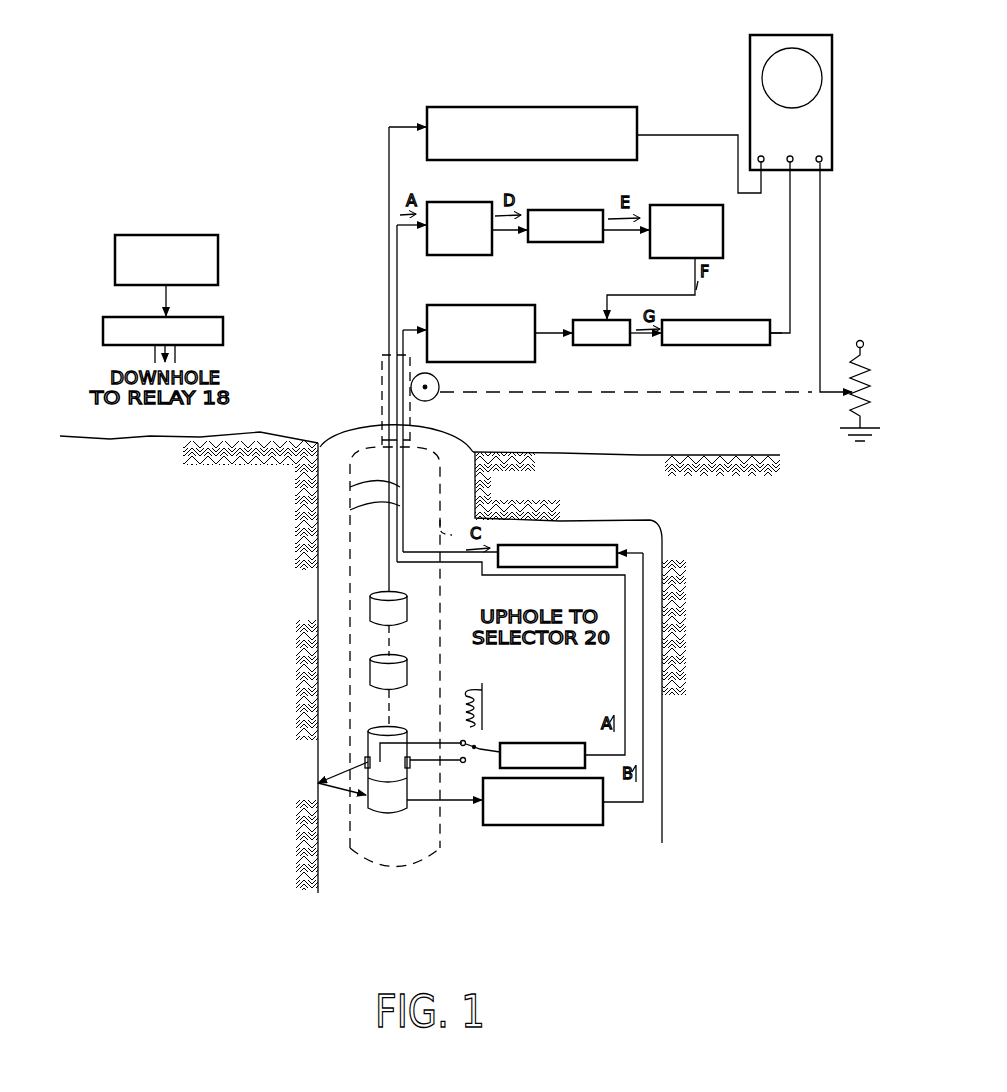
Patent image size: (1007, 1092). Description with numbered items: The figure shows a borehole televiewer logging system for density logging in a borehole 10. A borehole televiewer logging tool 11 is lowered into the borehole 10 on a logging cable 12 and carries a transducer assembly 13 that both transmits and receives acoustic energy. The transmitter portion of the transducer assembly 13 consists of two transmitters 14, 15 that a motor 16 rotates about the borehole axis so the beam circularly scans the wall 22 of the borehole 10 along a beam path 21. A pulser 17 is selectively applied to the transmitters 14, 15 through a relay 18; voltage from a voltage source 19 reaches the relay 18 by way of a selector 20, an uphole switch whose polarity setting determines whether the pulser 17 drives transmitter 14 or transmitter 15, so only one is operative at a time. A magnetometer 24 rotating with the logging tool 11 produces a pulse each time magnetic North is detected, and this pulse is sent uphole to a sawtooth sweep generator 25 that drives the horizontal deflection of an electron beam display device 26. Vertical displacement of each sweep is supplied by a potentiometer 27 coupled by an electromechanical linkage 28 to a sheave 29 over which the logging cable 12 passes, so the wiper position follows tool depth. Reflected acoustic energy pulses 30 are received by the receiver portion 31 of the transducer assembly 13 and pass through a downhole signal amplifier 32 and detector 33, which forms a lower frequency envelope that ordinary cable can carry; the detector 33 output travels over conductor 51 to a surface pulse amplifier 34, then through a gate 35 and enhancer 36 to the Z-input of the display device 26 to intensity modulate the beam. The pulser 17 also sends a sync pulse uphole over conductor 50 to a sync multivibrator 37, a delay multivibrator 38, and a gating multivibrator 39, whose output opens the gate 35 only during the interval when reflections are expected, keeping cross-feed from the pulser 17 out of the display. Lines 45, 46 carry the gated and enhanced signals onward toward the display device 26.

The borehole 10 is at (462, 474).
The borehole televiewer logging tool 11 is at (472, 526).
The logging cable 12 is at (382, 378).
The transducer assembly 13 is at (408, 732).
The transmitter 14 is at (366, 745).
The transmitter 15 is at (410, 765).
The motor 16 is at (407, 668).
The pulser 17 is at (543, 743).
The relay 18 is at (462, 673).
The voltage source 19 is at (193, 235).
The selector 20 is at (210, 317).
The beam path 21 is at (362, 763).
The wall 22 is at (318, 625).
The magnetometer 24 is at (408, 612).
The sawtooth sweep generator 25 is at (565, 107).
The electron beam display device 26 is at (784, 37).
The potentiometer 27 is at (848, 407).
The electromechanical linkage 28 is at (538, 393).
The sheave 29 is at (434, 398).
The reflected acoustic energy pulses 30 is at (318, 783).
The receiver portion 31 is at (378, 812).
The signal amplifier 32 is at (553, 825).
The detector 33 is at (549, 545).
The pulse amplifier 34 is at (482, 305).
The gate 35 is at (588, 345).
The enhancer 36 is at (728, 320).
The sync multivibrator 37 is at (463, 202).
The delay multivibrator 38 is at (570, 210).
The gating multivibrator 39 is at (688, 205).
The gate output line 45 is at (640, 345).
The enhancer output line 46 is at (786, 345).
The conductor 50 is at (363, 514).
The conductor 51 is at (365, 489).